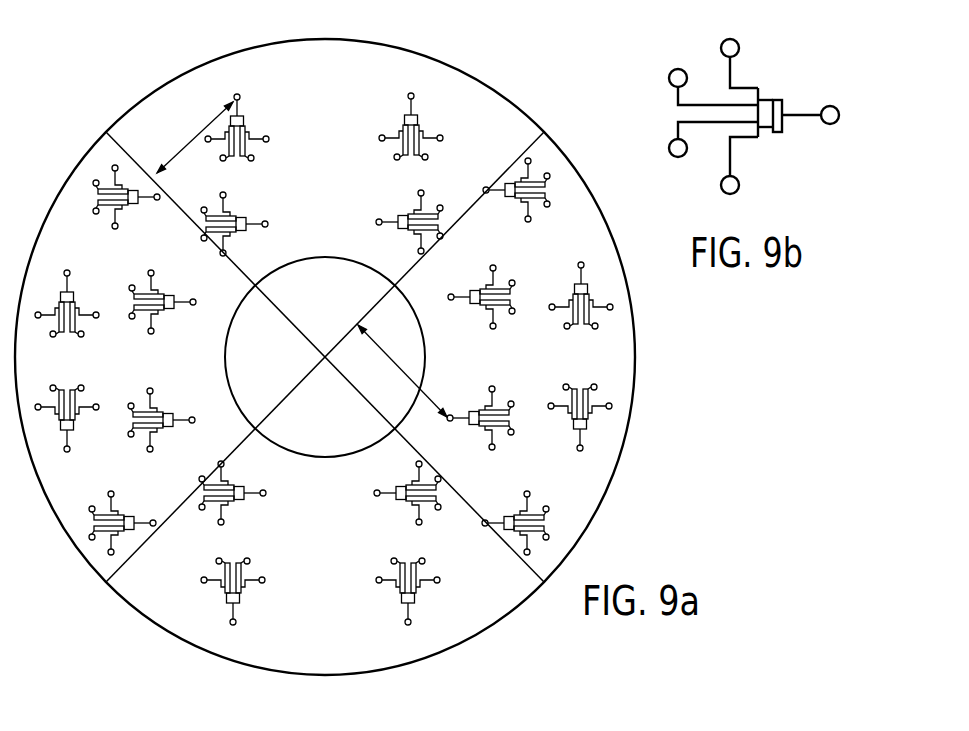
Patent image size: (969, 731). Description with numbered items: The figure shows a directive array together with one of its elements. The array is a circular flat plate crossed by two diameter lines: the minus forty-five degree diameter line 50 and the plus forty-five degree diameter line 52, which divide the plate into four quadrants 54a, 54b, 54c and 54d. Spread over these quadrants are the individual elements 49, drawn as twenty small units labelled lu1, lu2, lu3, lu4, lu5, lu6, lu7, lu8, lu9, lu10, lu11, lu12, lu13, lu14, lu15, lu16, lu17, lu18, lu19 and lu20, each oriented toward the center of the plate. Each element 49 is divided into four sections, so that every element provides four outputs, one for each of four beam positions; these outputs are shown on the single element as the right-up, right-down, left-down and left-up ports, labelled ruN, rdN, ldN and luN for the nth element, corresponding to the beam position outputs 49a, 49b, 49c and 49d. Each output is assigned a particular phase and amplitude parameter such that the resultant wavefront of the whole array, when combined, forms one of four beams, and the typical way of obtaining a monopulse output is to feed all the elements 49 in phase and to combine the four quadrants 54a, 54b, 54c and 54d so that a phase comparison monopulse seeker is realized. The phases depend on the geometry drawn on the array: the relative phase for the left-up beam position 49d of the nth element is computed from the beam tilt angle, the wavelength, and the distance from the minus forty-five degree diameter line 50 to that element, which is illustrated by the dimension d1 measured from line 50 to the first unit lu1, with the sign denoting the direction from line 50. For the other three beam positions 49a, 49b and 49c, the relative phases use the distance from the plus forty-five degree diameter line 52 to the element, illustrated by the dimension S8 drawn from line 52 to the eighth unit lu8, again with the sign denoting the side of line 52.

In FIG. 9a, the -45° diameter line 50 is at (123, 148).
In FIG. 9a, the +45° diameter line 52 is at (531, 143).
In FIG. 9a, the element 49 is at (395, 212).
In FIG. 9a, the quadrant 54a is at (345, 76).
In FIG. 9a, the quadrant 54b is at (68, 372).
In FIG. 9a, the quadrant 54c is at (360, 651).
In FIG. 9a, the quadrant 54d is at (583, 372).
In FIG. 9a, the distance from the -45° diameter line d1 is at (203, 130).
In FIG. 9a, the distance from the +45° diameter line S8 is at (422, 384).
In FIG. 9a, the logic unit 1 lu1 is at (254, 127).
In FIG. 9a, the logic unit 2 lu2 is at (237, 228).
In FIG. 9a, the logic unit 3 lu3 is at (429, 126).
In FIG. 9a, the logic unit 4 lu4 is at (405, 225).
In FIG. 9a, the logic unit 5 lu5 is at (524, 203).
In FIG. 9a, the logic unit 6 lu6 is at (489, 307).
In FIG. 9a, the logic unit 7 lu7 is at (587, 309).
In FIG. 9a, the logic unit 8 lu8 is at (488, 426).
In FIG. 9a, the logic unit 9 lu9 is at (580, 430).
In FIG. 9a, the logic unit 10 lu10 is at (536, 520).
In FIG. 9a, the logic unit 11 lu11 is at (394, 493).
In FIG. 9a, the logic unit 12 lu12 is at (422, 591).
In FIG. 9a, the logic unit 13 lu13 is at (250, 493).
In FIG. 9a, the logic unit 14 lu14 is at (249, 591).
In FIG. 9a, the logic unit 15 lu15 is at (128, 520).
In FIG. 9a, the logic unit 16 lu16 is at (163, 429).
In FIG. 9a, the logic unit 17 lu17 is at (74, 428).
In FIG. 9a, the logic unit 18 lu18 is at (76, 316).
In FIG. 9a, the logic unit 19 lu19 is at (164, 316).
In FIG. 9a, the logic unit 20 lu20 is at (125, 209).
In FIG. 9b, the beam position output 49a is at (741, 51).
In FIG. 9b, the beam position output 49b is at (685, 72).
In FIG. 9b, the beam position output 49c is at (690, 162).
In FIG. 9b, the left-up beam position output 49d is at (748, 182).
In FIG. 9b, the terminal ruN is at (712, 38).
In FIG. 9b, the terminal rdN is at (672, 69).
In FIG. 9b, the terminal ldN is at (672, 160).
In FIG. 9b, the terminal luN is at (744, 208).